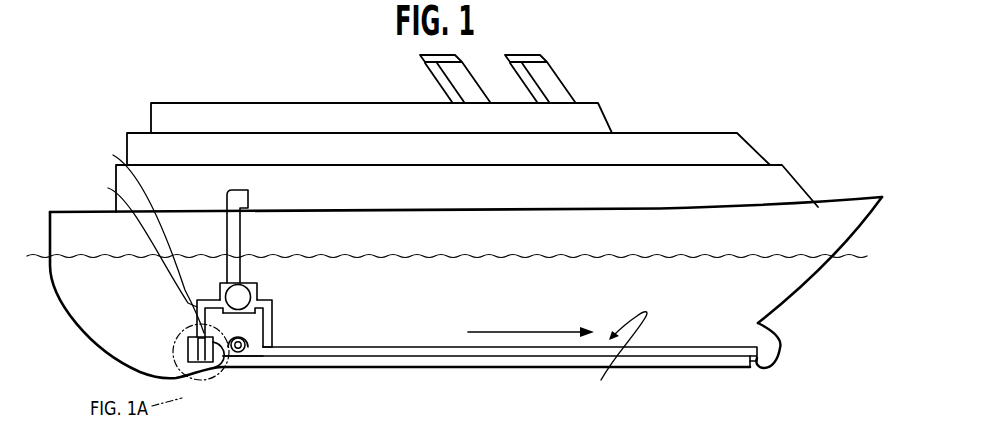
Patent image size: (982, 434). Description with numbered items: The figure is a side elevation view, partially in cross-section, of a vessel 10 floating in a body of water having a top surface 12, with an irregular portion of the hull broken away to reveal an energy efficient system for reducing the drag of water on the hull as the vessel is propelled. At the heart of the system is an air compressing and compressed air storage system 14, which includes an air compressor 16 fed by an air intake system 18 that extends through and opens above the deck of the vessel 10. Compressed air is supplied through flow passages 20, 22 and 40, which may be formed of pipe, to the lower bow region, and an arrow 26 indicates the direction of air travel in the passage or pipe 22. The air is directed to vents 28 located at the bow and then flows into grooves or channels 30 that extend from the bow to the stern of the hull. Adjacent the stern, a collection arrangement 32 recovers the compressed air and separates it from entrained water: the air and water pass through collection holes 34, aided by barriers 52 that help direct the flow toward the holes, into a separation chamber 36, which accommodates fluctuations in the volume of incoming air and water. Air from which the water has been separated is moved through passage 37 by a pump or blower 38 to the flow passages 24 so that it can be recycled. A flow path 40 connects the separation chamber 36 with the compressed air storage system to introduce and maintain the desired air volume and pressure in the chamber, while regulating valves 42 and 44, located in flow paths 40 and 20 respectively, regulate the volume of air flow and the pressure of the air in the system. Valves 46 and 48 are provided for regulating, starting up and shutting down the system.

The vessel 10 is at (310, 82).
The top surface 12 is at (40, 250).
The air compressing and compressed air storage system 14 is at (245, 282).
The air compressor 16 is at (258, 284).
The air intake system 18 is at (261, 191).
The flow passage 20 is at (277, 302).
The flow passage 22 is at (601, 380).
The flow passages 24 is at (290, 367).
The arrow 26 is at (485, 333).
The vents 28 is at (788, 402).
The grooves or channels 30 is at (733, 363).
The collection arrangement 32 is at (203, 367).
The collection holes 34 is at (243, 356).
The separation chamber 36 is at (188, 348).
The passage 37 is at (273, 330).
The pump or blower 38 is at (258, 356).
The flow path 40 is at (146, 239).
The regulating valve 42 is at (140, 243).
The regulating valve 44 is at (282, 338).
The valve 46 is at (220, 368).
The valve 48 is at (758, 355).
The barriers 52 is at (543, 368).